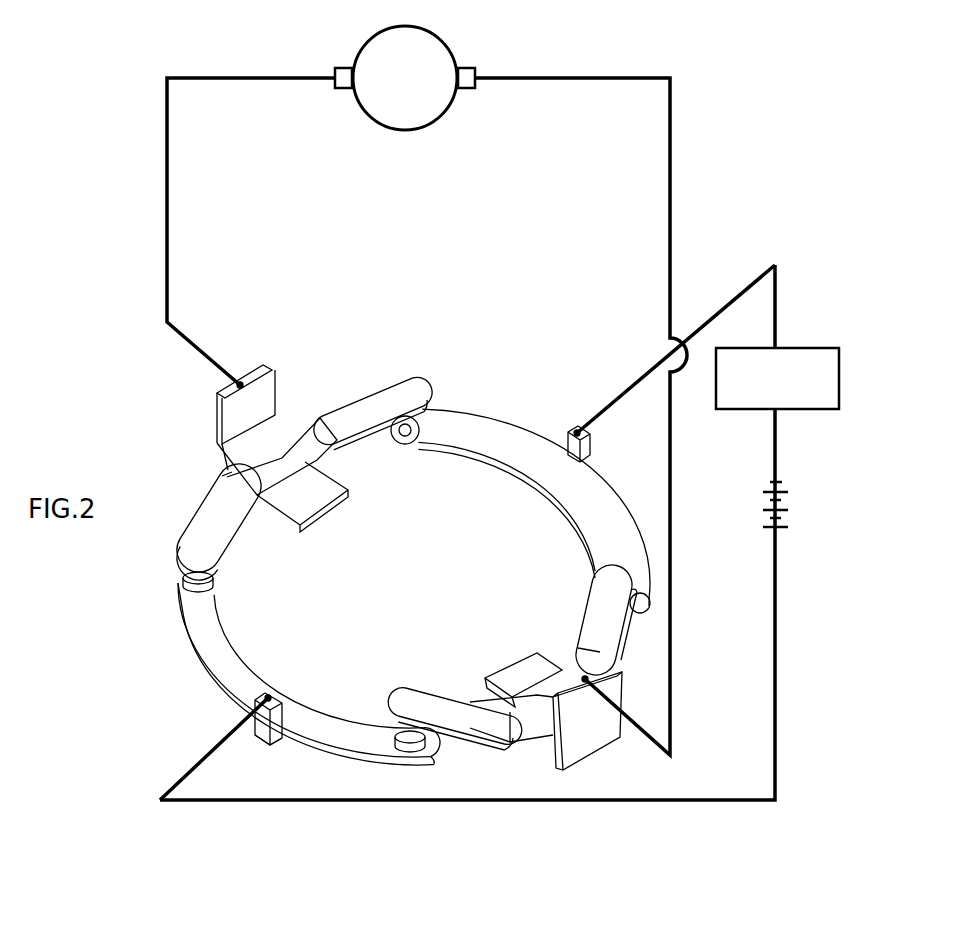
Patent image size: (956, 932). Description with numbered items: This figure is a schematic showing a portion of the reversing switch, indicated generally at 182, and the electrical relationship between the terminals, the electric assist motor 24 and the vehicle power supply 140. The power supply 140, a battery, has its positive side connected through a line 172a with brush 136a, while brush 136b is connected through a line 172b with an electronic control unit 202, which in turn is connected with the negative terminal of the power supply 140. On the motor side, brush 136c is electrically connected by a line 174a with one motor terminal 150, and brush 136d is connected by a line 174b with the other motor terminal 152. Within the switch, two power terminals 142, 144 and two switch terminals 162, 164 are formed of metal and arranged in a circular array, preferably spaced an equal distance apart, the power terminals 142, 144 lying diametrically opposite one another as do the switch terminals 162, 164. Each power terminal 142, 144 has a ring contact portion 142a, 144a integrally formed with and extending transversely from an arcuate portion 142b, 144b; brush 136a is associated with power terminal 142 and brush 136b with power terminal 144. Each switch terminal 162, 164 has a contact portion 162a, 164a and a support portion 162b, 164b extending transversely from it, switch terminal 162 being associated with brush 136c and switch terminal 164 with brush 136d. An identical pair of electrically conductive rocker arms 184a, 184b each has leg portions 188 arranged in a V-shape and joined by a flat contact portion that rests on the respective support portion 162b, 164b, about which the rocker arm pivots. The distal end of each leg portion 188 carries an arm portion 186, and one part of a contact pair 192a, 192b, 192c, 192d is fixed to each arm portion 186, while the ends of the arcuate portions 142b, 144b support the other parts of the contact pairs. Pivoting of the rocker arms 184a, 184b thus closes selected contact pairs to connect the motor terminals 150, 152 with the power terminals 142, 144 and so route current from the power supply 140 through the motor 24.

The electric assist motor 24 is at (430, 50).
The motor terminal 150 is at (345, 88).
The motor terminal 152 is at (465, 90).
The motor lead wire 174a is at (167, 182).
The motor lead wire 174b is at (670, 192).
The power supply wire 172a is at (600, 805).
The power supply wire 172b is at (730, 300).
The vehicle power supply 140 is at (792, 508).
The electronic control unit 202 is at (790, 347).
The switch assembly 182 is at (490, 397).
The power terminal 144 is at (556, 424).
The ring contact portion 144a is at (590, 450).
The arcuate portion 144b is at (592, 495).
The power terminal 142 is at (290, 742).
The ring contact portion 142a is at (268, 742).
The arcuate portion 142b is at (248, 678).
The brush 136a is at (258, 706).
The brush 136b is at (580, 425).
The brush 136c is at (240, 378).
The brush 136d is at (620, 665).
The switch terminal 162 is at (246, 422).
The contact portion 162a is at (266, 393).
The support portion 162b is at (282, 435).
The switch terminal 164 is at (576, 706).
The contact portion 164a is at (610, 686).
The support portion 164b is at (522, 670).
The rocker arm 184a is at (222, 476).
The rocker arm 184b is at (585, 610).
The arm portion 186 is at (407, 392).
The leg portions 188 is at (307, 452).
The contact pin 192a is at (404, 440).
The contact pin 192b is at (643, 598).
The contact pin 192c is at (394, 732).
The contact pin 192d is at (216, 580).